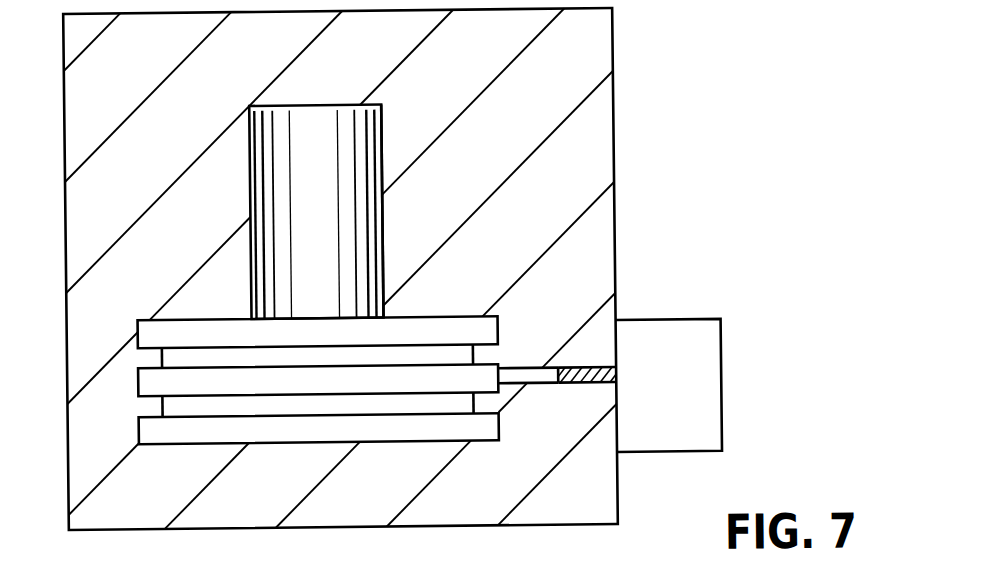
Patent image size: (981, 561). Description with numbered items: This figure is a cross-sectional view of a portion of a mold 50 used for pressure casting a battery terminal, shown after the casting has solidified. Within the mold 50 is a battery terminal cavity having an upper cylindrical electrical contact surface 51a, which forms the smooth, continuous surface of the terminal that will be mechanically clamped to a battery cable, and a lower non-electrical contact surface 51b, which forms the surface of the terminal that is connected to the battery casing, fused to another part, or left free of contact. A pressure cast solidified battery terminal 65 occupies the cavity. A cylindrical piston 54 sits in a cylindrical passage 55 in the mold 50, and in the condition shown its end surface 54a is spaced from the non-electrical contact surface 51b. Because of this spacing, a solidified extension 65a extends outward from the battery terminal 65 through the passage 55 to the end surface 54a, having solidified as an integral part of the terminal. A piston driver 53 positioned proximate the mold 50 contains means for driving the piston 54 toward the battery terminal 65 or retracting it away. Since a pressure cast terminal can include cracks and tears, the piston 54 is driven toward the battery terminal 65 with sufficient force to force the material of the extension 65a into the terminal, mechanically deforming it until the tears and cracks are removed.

The mold 50 is at (613, 31).
The battery terminal 65 is at (317, 118).
The electrical contact surface 51a is at (383, 197).
The non-electrical contact surface 51b is at (498, 319).
The extension 65a is at (528, 379).
The piston 54 is at (560, 373).
The end surface 54a is at (557, 377).
The cylindrical passage 55 is at (582, 387).
The piston driver 53 is at (720, 341).